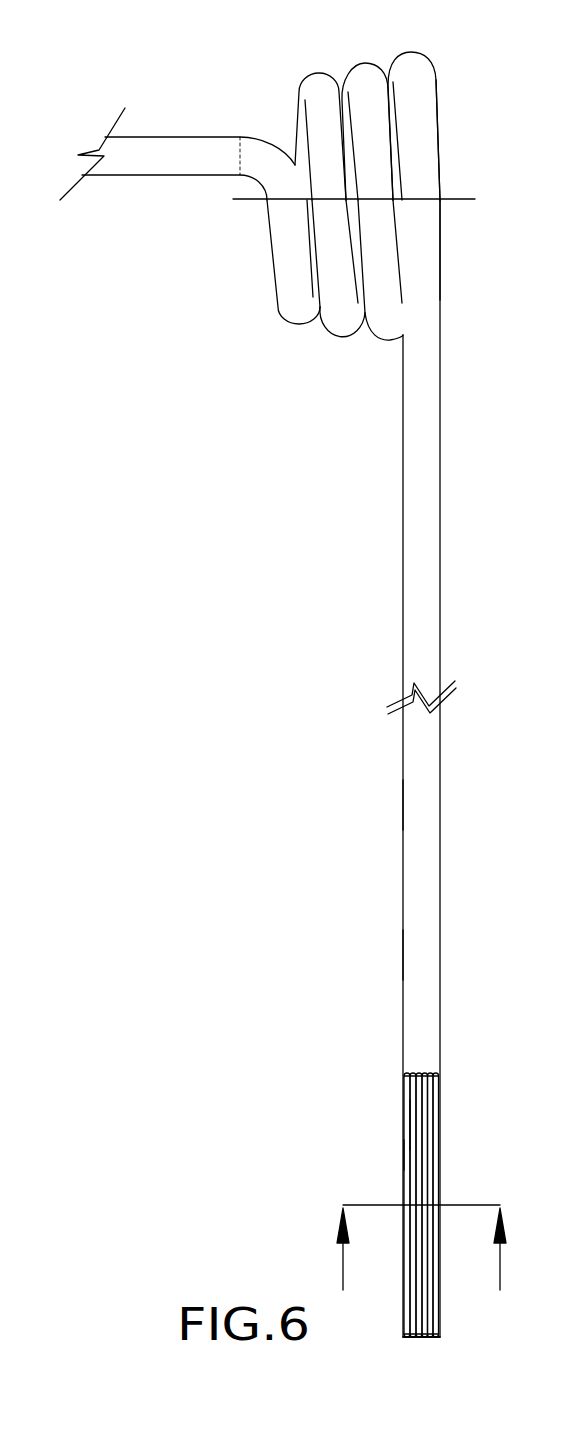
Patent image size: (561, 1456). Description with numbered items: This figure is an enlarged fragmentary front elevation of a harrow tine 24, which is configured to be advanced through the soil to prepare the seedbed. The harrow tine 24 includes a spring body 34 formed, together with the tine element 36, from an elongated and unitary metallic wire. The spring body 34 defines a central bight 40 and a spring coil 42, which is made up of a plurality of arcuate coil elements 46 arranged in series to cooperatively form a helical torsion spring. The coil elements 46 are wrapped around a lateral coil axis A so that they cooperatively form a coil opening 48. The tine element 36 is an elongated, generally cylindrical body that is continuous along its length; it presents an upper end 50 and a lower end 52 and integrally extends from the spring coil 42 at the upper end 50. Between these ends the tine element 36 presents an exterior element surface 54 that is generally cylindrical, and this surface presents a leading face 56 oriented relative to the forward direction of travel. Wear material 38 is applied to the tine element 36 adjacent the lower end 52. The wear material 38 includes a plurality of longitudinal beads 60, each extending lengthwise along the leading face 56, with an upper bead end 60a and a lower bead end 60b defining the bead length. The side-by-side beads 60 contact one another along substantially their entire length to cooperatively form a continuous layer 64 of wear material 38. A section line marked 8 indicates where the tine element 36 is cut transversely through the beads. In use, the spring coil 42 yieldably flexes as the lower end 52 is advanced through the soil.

The harrow tine 24 is at (177, 118).
The central bight 40 is at (138, 163).
The arcuate coil elements 46 is at (410, 75).
The spring body 34 is at (292, 302).
The spring coil 42 is at (335, 320).
The coil opening 48 is at (455, 121).
The lateral coil axis A is at (455, 198).
The upper end 50 is at (488, 262).
The tine element 36 is at (412, 523).
The exterior element surface 54 is at (415, 798).
The leading face 56 is at (415, 948).
The longitudinal bead 60 is at (415, 1207).
The upper bead end 60a is at (423, 1072).
The lower bead end 60b is at (423, 1338).
The wear material 38 is at (412, 1125).
The continuous layer 64 is at (410, 1157).
The lower end 52 is at (430, 1338).
The section line 8- 8 is at (418, 1223).